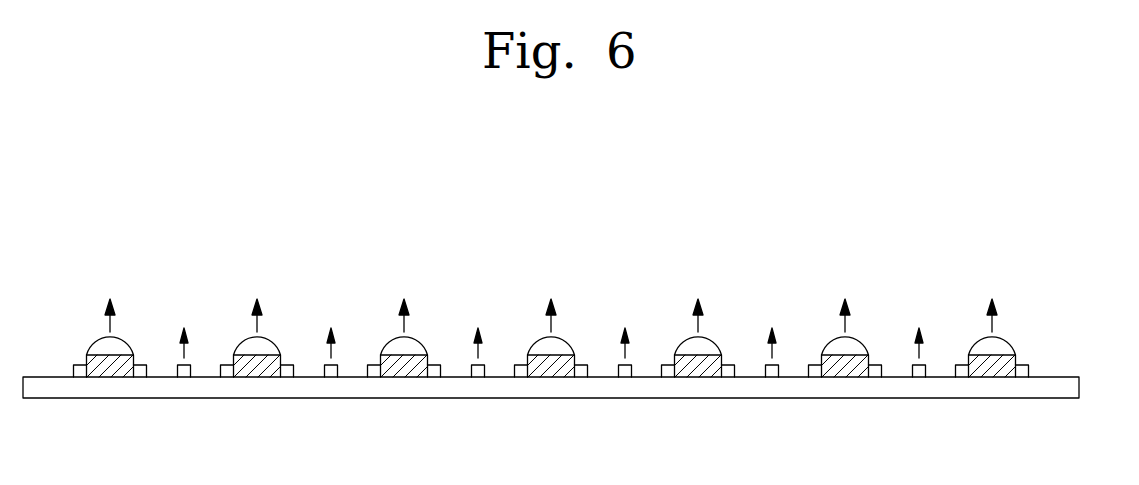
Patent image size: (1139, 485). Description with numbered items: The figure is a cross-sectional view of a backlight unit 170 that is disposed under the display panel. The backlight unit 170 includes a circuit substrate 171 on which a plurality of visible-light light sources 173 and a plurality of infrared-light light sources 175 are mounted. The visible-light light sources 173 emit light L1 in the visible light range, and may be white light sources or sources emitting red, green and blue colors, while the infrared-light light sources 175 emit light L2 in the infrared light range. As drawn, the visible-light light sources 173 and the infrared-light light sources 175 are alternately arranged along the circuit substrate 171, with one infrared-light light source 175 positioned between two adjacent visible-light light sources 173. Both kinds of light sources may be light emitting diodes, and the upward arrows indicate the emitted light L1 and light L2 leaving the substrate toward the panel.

The backlight unit 170 is at (568, 356).
The circuit substrate 171 is at (625, 390).
The visible-light light source 173 is at (106, 377).
The infrared-light light source 175 is at (180, 377).
The light in the visible light range L1 is at (991, 291).
The light in the infrared light range L2 is at (919, 318).